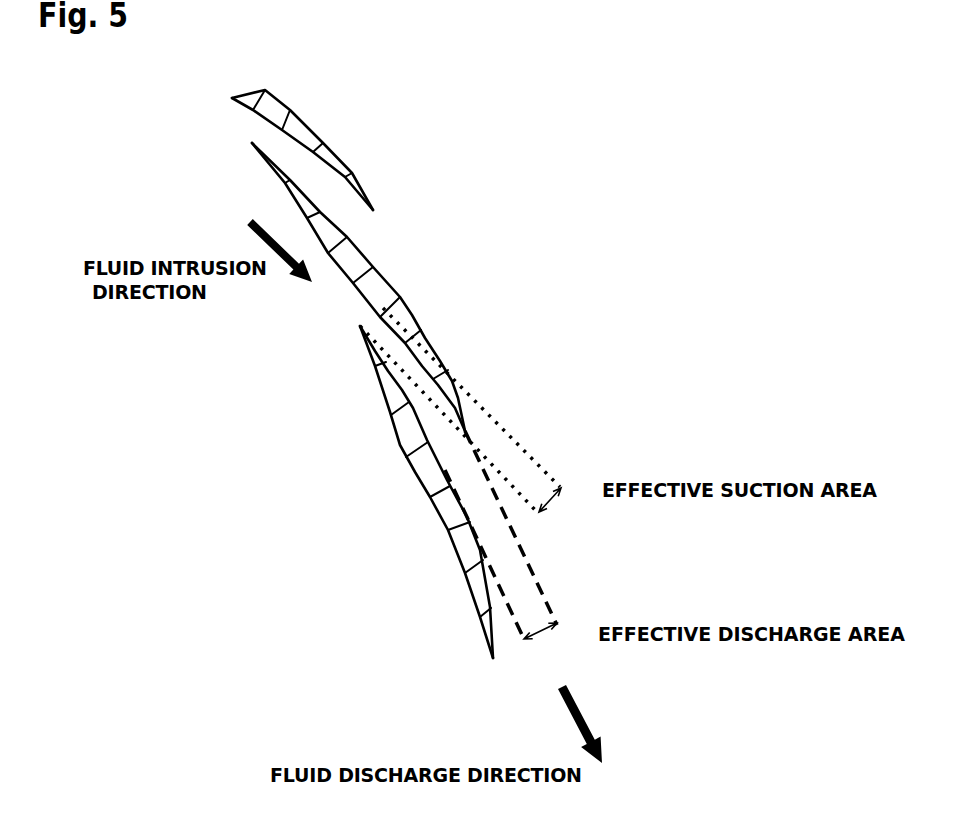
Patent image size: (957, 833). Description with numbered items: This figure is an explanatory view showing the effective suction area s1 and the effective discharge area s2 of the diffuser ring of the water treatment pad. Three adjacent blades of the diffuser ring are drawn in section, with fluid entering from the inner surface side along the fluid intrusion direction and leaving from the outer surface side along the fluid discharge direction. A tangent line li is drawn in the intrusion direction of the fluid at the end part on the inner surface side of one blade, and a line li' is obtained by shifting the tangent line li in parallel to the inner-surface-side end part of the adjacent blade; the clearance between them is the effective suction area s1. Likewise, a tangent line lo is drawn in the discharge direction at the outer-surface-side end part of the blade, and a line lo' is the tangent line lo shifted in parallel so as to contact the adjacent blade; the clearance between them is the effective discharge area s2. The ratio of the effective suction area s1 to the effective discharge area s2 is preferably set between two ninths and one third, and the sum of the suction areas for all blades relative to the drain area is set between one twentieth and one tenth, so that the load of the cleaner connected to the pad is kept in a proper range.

The tangent line in the intrusion direction of fluid li is at (471, 397).
The parallel-shifted line of tangent line li li' is at (468, 436).
The tangent line in the discharge direction of fluid lo is at (532, 528).
The parallel-shifted line of tangent line lo lo' is at (484, 590).
The effective suction area s1 is at (564, 495).
The effective discharge area s2 is at (556, 634).